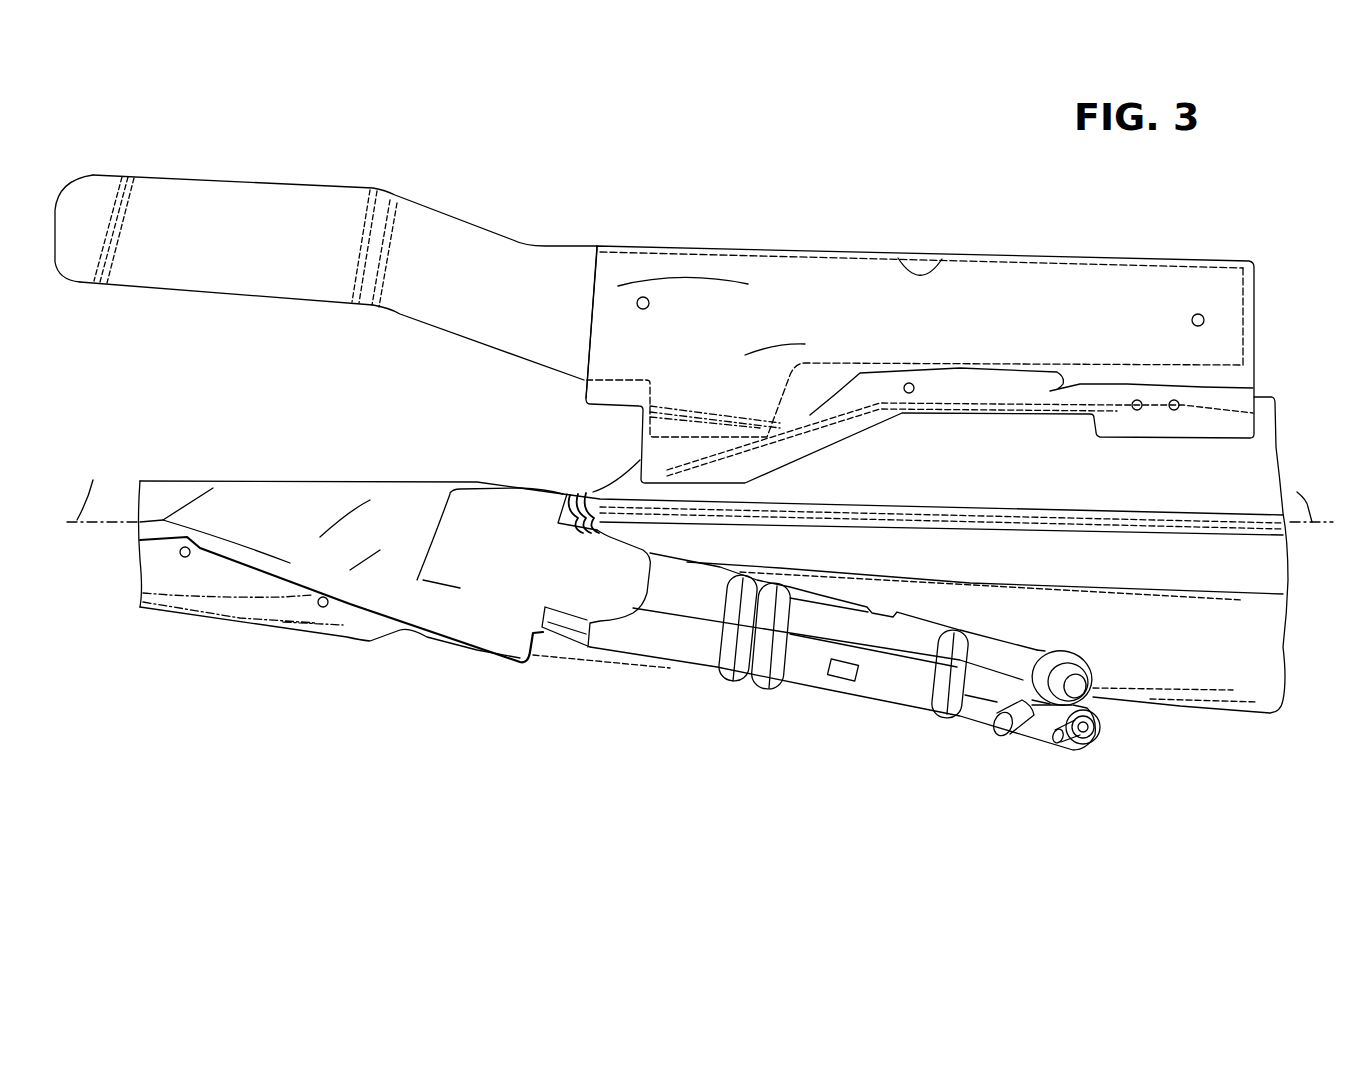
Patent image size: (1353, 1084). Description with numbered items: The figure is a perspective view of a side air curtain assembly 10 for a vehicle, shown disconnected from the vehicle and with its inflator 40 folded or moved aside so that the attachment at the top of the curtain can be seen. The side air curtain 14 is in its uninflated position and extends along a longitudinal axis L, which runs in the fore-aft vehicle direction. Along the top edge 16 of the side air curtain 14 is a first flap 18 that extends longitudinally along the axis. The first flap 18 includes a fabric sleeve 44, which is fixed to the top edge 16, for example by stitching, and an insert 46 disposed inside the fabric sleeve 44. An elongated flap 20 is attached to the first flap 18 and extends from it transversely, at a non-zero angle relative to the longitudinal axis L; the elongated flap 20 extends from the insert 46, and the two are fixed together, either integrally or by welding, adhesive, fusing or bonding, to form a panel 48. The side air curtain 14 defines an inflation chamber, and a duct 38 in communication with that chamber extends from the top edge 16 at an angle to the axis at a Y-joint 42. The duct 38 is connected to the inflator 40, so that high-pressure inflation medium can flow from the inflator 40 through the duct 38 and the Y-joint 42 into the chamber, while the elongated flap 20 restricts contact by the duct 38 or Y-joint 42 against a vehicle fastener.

The side air curtain assembly 10 is at (1196, 221).
The side air curtain 14 is at (1219, 672).
The top edge 16 is at (1257, 397).
The first flap 18 is at (688, 245).
The elongated flap 20 is at (283, 207).
The duct 38 is at (353, 601).
The inflator 40 is at (812, 665).
The Y-joint 42 is at (568, 494).
The fabric sleeve 44 is at (834, 253).
The insert 46 is at (1023, 265).
The panel 48 is at (574, 244).